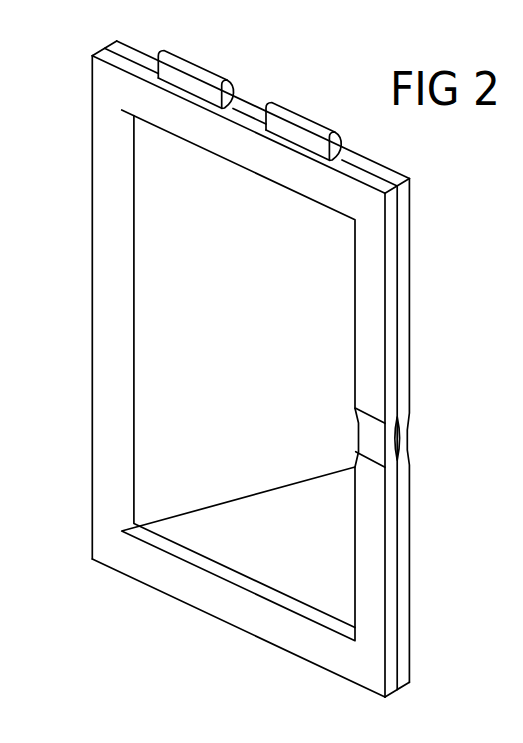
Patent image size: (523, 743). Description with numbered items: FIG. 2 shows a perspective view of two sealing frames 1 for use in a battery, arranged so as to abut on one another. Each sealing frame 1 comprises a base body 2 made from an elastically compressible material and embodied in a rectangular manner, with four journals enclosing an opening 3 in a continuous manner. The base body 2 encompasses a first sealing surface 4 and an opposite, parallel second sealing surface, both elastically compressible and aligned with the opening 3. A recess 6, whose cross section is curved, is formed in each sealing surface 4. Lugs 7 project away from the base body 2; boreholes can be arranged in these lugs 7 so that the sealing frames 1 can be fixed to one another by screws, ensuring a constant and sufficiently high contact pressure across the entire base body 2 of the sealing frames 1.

The sealing frame 1 is at (114, 93).
The base body 2 is at (172, 575).
The opening 3 is at (173, 479).
The first sealing surface 4 is at (107, 163).
The recess 6 is at (373, 440).
The lug 7 is at (193, 73).